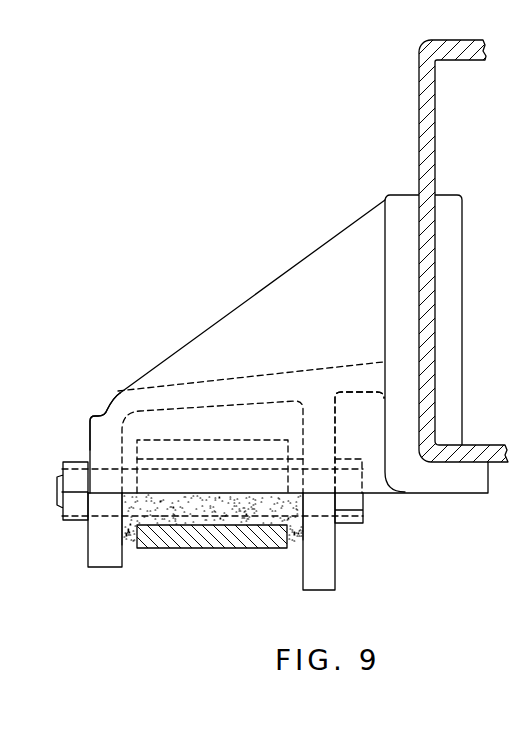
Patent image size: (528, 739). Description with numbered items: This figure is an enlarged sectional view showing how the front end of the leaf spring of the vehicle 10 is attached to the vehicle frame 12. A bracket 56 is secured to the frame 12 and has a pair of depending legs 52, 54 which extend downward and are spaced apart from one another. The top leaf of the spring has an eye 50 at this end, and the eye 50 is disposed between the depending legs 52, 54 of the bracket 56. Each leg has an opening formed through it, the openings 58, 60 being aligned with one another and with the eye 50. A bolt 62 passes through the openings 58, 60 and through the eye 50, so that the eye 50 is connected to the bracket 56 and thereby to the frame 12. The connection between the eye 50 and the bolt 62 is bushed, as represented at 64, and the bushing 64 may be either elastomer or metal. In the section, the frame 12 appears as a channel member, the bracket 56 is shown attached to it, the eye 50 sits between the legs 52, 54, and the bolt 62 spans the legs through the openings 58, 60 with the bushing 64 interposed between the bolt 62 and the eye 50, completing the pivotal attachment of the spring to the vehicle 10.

The vehicle 10 is at (17, 150).
The frame 12 is at (418, 116).
The eye 50 is at (198, 550).
The depending leg 52 is at (110, 567).
The depending leg 54 is at (335, 578).
The bracket 56 is at (256, 293).
The opening 58 is at (105, 467).
The opening 60 is at (321, 468).
The bolt 62 is at (58, 493).
The bushing 64 is at (129, 540).